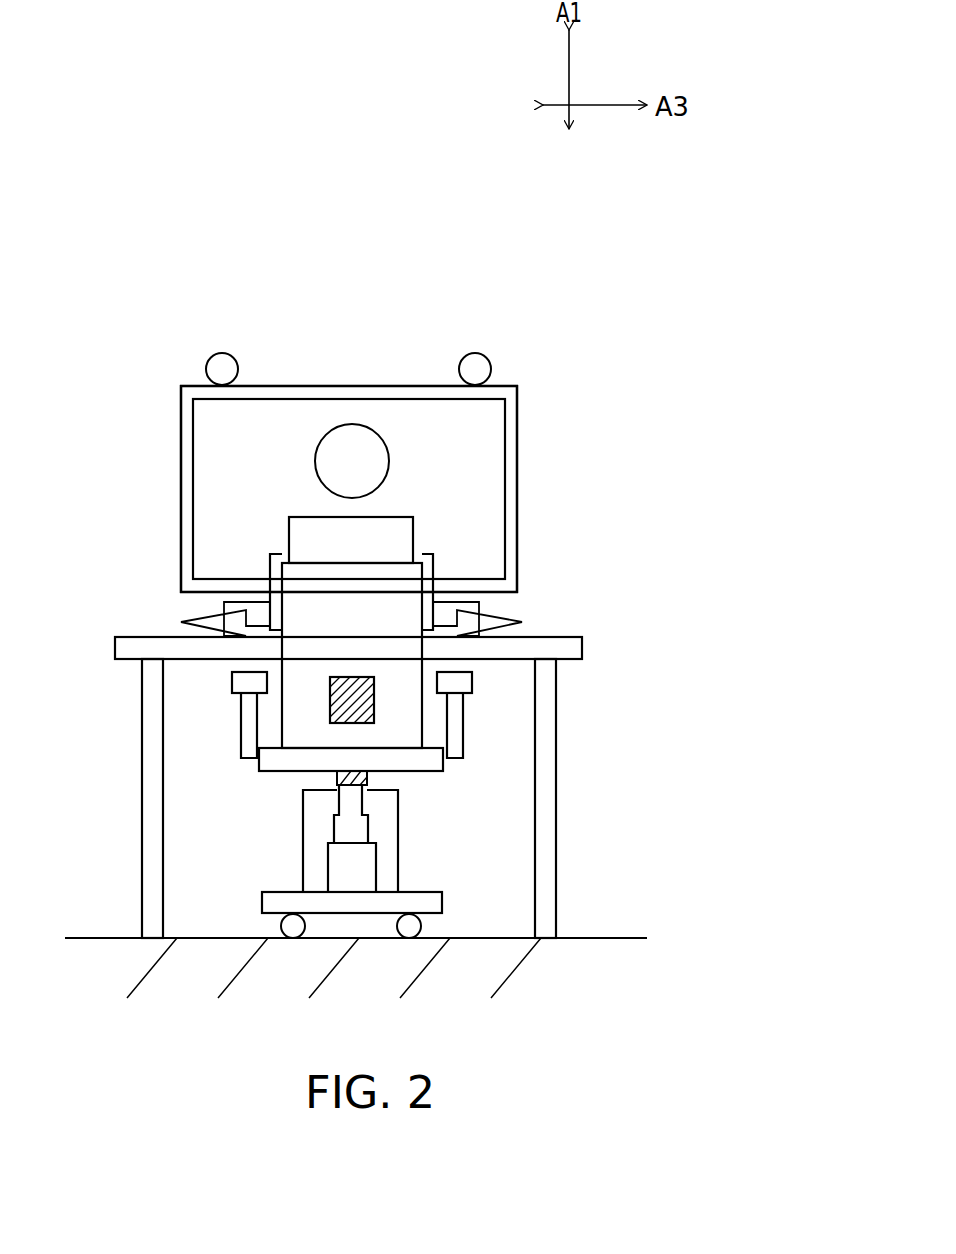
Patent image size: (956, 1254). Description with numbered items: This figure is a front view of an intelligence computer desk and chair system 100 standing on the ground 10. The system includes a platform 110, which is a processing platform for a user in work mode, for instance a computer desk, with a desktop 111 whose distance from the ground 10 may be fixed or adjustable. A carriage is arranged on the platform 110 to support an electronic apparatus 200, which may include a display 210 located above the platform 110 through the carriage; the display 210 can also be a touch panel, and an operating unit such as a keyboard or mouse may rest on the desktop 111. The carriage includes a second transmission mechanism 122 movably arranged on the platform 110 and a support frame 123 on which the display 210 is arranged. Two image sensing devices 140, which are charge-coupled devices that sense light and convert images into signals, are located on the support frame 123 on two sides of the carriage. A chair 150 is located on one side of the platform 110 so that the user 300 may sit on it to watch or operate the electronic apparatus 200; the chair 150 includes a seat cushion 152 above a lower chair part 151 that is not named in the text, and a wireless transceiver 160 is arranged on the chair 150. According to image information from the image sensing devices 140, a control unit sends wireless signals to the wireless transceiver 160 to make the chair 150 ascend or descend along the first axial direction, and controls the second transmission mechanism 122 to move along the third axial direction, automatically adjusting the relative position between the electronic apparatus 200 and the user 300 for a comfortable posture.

The ground 10 is at (93, 957).
The intelligence computer desk and chair system 100 is at (667, 910).
The platform 110 is at (551, 738).
The desktop 111 is at (571, 636).
The second transmission mechanism 122 is at (478, 607).
The support frame 123 is at (510, 454).
The image sensing device 140 is at (220, 367).
The chair 150 is at (433, 794).
The shaft 151 is at (335, 777).
The seat cushion 152 is at (268, 762).
The wireless transceiver 160 is at (330, 713).
The electronic apparatus 200 is at (349, 489).
The display 210 is at (227, 455).
The user 300 is at (298, 537).